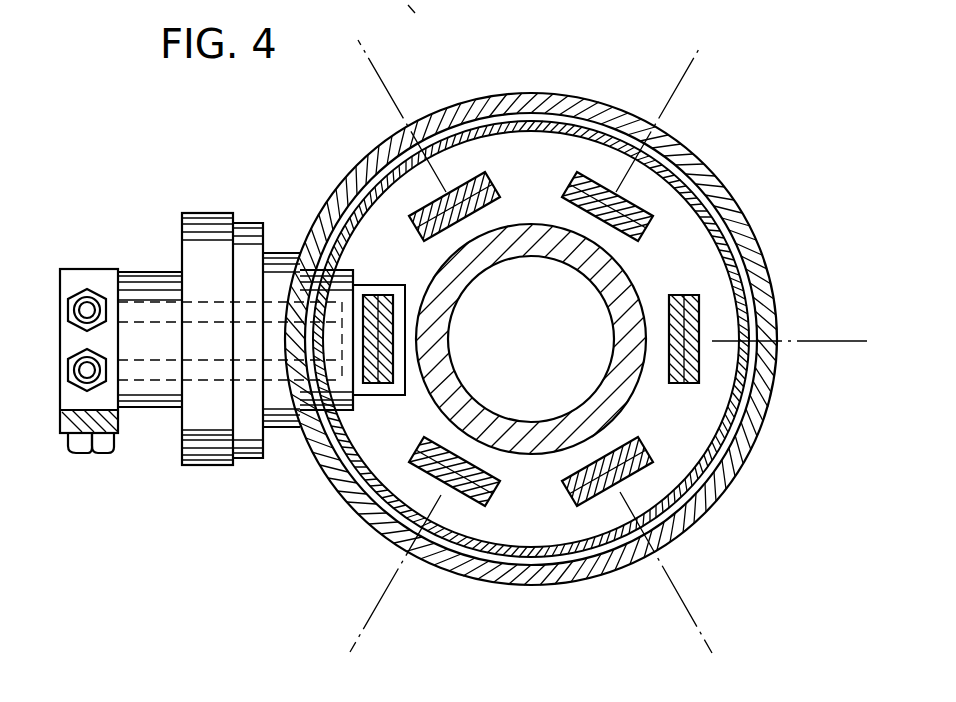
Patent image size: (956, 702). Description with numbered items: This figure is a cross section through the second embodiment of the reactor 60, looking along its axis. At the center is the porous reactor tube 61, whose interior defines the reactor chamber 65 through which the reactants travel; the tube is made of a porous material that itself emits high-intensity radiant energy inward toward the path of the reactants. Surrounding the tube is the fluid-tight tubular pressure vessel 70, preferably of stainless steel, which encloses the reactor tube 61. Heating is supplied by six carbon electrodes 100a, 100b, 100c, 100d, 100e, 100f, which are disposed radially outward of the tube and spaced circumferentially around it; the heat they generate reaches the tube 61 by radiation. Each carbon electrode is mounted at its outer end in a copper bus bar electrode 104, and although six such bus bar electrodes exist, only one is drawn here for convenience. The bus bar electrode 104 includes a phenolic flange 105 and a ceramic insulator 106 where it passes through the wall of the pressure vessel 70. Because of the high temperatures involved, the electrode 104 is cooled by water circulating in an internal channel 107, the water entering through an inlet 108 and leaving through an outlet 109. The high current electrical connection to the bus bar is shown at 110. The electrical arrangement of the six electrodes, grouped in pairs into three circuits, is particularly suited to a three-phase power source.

The reactor 60 is at (746, 200).
The reactor tube 61 is at (456, 391).
The reactor chamber 65 is at (531, 339).
The pressure vessel 70 is at (757, 260).
The carbon electrode 100a is at (486, 503).
The carbon electrode 100b is at (565, 484).
The carbon electrode 100c is at (698, 385).
The carbon electrode 100d is at (639, 234).
The carbon electrode 100e is at (488, 180).
The carbon electrode 100f is at (384, 386).
The copper bus bar electrode 104 is at (211, 210).
The phenolic flange 105 is at (221, 458).
The ceramic insulator 106 is at (345, 270).
The internal channel 107 is at (157, 382).
The inlet 108 is at (86, 290).
The outlet 109 is at (70, 436).
The high current electrical connection 110 is at (97, 452).